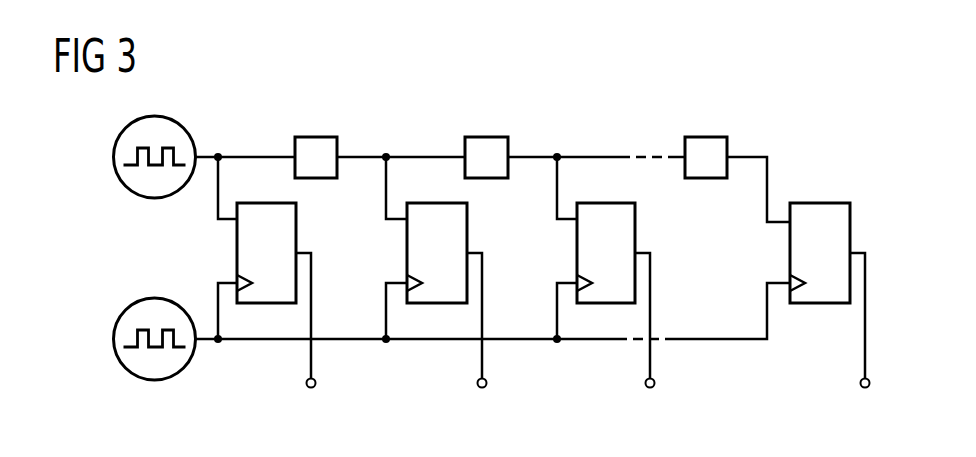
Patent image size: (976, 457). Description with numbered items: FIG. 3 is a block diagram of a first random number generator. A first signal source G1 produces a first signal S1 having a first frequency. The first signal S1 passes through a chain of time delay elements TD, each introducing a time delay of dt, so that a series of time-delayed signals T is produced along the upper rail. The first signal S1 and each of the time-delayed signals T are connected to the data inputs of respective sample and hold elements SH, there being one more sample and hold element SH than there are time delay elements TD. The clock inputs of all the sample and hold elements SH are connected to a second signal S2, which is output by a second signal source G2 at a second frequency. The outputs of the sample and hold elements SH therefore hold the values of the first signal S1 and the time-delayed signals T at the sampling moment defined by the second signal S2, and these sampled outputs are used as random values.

The first signal source G1 is at (113, 157).
The second signal source G2 is at (113, 339).
The first signal S1 is at (246, 147).
The second signal S2 is at (493, 313).
The time-delayed signals T is at (563, 175).
The time delay elements TD is at (315, 137).
The sample and hold elements SH is at (237, 248).